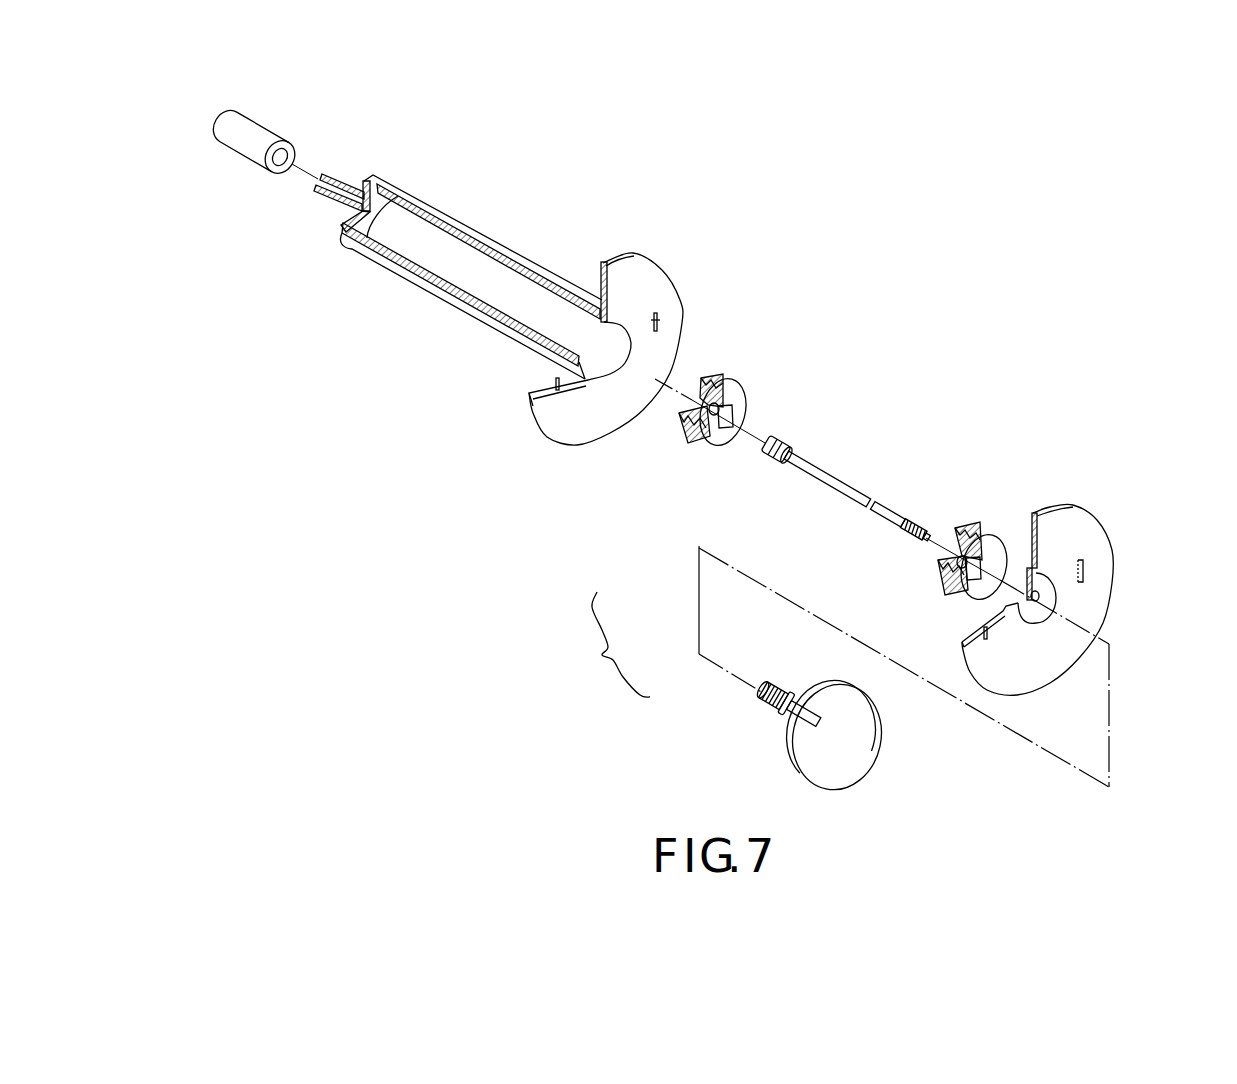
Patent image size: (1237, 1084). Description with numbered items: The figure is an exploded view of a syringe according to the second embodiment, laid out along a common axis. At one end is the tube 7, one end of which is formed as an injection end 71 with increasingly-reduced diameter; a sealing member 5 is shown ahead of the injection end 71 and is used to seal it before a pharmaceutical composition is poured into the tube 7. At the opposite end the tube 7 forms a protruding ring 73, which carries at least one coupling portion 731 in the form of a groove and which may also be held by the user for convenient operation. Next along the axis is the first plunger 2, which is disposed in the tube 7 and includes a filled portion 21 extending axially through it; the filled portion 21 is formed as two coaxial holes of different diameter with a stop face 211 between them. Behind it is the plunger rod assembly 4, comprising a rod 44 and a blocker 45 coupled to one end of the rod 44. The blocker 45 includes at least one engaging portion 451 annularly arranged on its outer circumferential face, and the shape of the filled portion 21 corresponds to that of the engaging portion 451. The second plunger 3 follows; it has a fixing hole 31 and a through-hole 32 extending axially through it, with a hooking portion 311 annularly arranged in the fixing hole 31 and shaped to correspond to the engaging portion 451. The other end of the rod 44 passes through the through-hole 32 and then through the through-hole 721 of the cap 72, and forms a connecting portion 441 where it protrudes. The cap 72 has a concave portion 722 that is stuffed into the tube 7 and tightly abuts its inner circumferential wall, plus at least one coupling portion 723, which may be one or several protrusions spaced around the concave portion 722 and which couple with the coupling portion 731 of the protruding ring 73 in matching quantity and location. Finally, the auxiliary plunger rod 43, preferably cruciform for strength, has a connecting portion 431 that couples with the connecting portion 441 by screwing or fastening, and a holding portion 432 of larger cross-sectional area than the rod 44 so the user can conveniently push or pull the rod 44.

The sealing member 5 is at (253, 153).
The injection end 71 is at (334, 183).
The tube 7 is at (453, 218).
The protruding ring 73 is at (653, 273).
The coupling portion 731 is at (658, 320).
The first plunger 2 is at (740, 398).
The filled portion 21 is at (733, 414).
The stop face 211 is at (716, 430).
The plunger rod assembly 4 is at (616, 644).
The auxiliary plunger rod 43 is at (790, 693).
The connecting portion 431 is at (760, 700).
The holding portion 432 is at (840, 763).
The rod 44 is at (827, 485).
The connecting portion 441 is at (917, 527).
The blocker 45 is at (768, 455).
The engaging portion 451 is at (787, 442).
The second plunger 3 is at (993, 543).
The fixing hole 31 is at (957, 553).
The hooking portion 311 is at (963, 533).
The through-hole 32 is at (970, 597).
The cap 72 is at (1078, 517).
The through-hole 721 is at (1048, 585).
The concave portion 722 is at (1032, 622).
The coupling portion 723 is at (1084, 558).